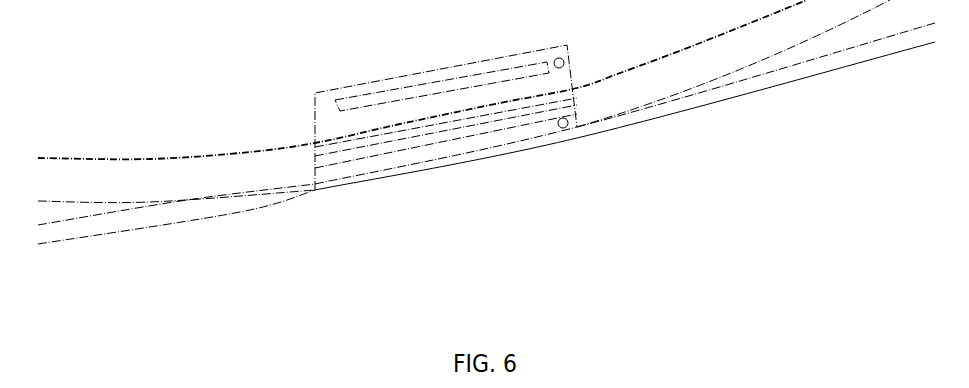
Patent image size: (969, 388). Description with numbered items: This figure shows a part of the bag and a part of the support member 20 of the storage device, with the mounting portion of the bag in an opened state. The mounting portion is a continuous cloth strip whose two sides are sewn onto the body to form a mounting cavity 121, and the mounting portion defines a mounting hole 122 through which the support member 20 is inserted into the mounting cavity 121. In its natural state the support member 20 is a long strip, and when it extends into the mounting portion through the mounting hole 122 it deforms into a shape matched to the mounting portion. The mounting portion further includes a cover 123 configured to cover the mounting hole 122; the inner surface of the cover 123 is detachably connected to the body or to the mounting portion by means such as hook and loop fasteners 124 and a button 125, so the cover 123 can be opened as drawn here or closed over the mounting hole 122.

The support member 20 is at (375, 150).
The mounting cavity 121 is at (343, 192).
The mounting hole 122 is at (440, 176).
The cover 123 is at (316, 108).
The hook and loop fasteners 124 is at (345, 110).
The button 125 is at (566, 129).